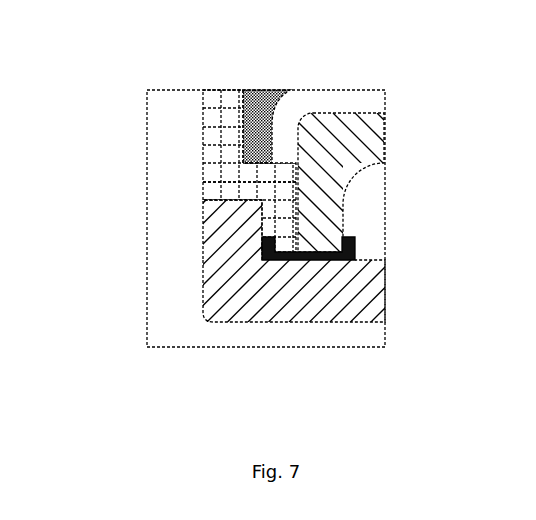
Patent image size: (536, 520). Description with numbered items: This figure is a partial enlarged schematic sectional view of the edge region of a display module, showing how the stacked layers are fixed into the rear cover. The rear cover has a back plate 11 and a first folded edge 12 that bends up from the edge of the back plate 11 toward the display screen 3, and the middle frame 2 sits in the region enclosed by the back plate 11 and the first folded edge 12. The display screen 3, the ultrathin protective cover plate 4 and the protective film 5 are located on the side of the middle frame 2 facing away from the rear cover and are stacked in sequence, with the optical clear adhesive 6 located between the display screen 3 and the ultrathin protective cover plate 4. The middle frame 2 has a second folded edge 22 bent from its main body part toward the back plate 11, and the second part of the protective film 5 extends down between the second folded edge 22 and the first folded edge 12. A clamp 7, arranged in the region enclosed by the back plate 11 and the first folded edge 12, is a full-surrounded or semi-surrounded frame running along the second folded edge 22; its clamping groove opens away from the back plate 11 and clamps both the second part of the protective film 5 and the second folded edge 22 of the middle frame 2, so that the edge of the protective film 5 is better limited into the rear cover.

The middle frame 2 is at (347, 143).
The second folded edge 22 is at (323, 226).
The display screen 3 is at (345, 103).
The ultrathin protective cover plate 4 is at (263, 113).
The protective film 5 is at (203, 183).
The optical clear adhesive 6 is at (245, 103).
The clamp 7 is at (355, 247).
The back plate 11 is at (318, 288).
The first folded edge 12 is at (228, 270).